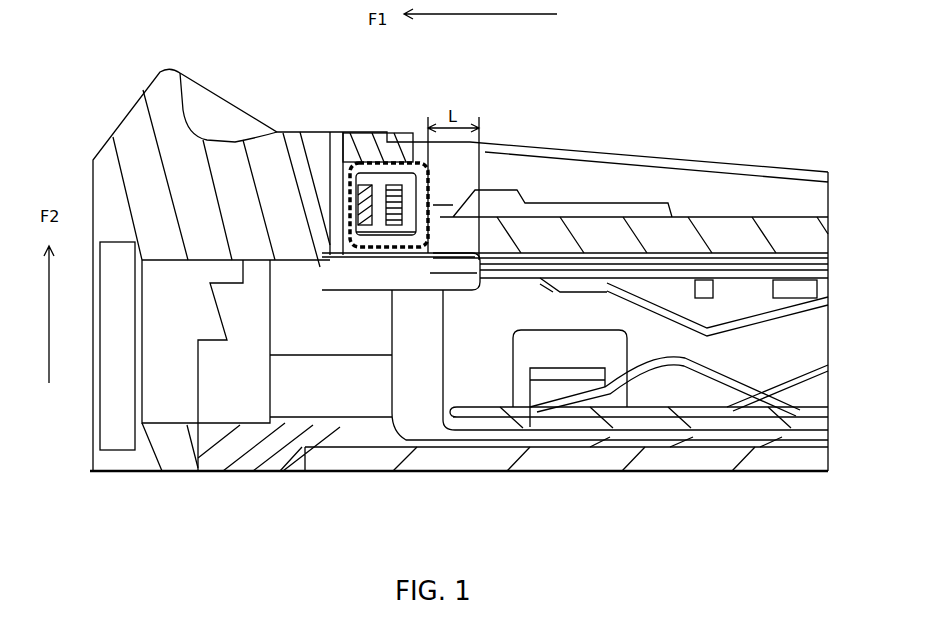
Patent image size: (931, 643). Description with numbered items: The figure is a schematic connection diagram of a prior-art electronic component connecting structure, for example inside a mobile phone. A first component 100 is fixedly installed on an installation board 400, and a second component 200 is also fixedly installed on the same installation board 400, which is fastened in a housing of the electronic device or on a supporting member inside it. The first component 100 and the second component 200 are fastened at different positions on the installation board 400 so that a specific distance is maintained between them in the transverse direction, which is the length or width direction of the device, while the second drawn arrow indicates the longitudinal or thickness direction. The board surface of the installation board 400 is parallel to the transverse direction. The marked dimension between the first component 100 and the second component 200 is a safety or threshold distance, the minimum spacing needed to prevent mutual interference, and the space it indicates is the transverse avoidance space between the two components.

The first component 100 is at (363, 163).
The second component 200 is at (492, 373).
The installation board 400 is at (685, 238).